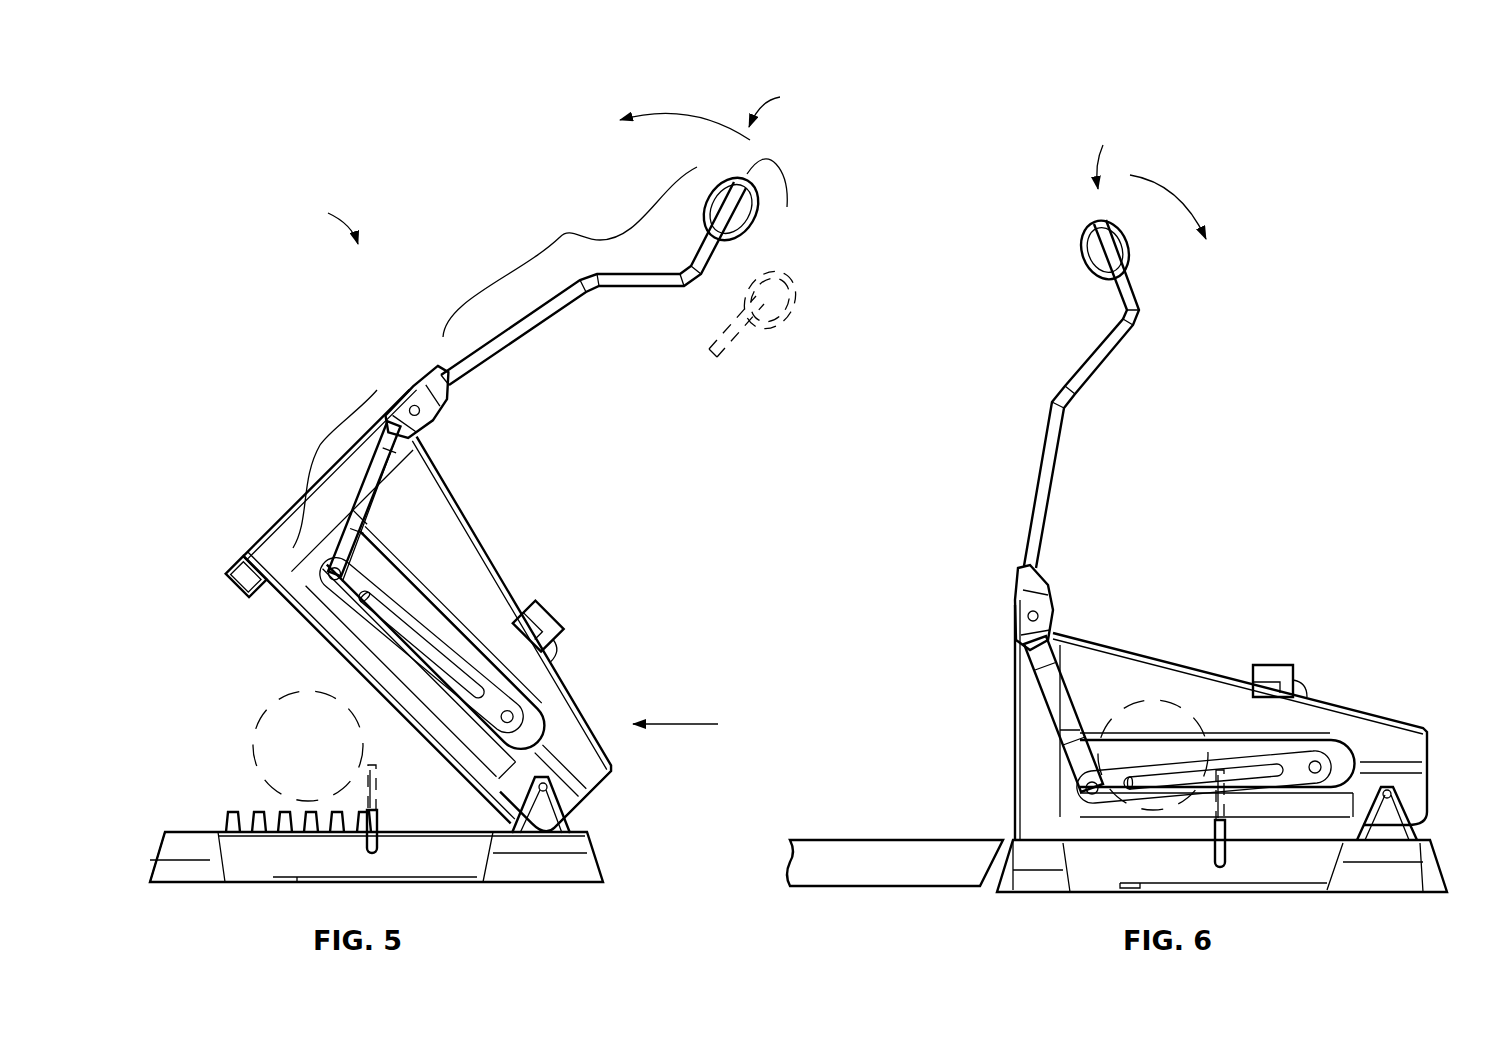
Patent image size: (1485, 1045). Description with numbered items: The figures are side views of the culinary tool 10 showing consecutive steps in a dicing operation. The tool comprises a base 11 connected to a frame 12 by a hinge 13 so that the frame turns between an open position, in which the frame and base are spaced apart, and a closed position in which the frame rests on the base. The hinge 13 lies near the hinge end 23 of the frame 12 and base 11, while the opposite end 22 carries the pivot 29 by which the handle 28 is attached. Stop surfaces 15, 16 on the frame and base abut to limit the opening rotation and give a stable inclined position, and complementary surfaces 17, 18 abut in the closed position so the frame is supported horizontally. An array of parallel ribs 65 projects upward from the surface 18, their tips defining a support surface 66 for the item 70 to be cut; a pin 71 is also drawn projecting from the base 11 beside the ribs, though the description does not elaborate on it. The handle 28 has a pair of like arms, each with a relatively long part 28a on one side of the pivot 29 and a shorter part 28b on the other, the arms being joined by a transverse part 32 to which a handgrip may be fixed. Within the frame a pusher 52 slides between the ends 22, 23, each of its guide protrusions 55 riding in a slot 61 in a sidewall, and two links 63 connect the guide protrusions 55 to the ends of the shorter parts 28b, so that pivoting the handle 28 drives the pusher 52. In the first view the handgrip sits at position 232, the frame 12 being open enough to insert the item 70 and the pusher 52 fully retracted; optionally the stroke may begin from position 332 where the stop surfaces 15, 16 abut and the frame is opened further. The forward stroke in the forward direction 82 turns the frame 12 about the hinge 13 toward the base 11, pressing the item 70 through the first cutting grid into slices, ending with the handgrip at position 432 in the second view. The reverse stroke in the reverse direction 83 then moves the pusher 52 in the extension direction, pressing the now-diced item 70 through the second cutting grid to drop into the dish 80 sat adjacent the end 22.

In FIG. 5, the culinary tool 10 is at (310, 218).
In FIG. 5, the base 11 is at (188, 871).
In FIG. 6, the base 11 is at (1222, 866).
In FIG. 5, the frame 12 is at (279, 541).
In FIG. 5, the hinge 13 is at (538, 792).
In FIG. 6, the hinge 13 is at (1387, 813).
In FIG. 5, the stop surface 15 is at (549, 780).
In FIG. 5, the stop surface 16 is at (617, 764).
In FIG. 5, the complementary surface 17 is at (287, 604).
In FIG. 5, the complementary surface 18 is at (175, 826).
In FIG. 5, the end 22 is at (298, 469).
In FIG. 6, the end 22 is at (1020, 713).
In FIG. 5, the hinge end 23 is at (693, 724).
In FIG. 5, the handle 28 is at (572, 342).
In FIG. 6, the handle 28 is at (1081, 394).
In FIG. 5, the long part of arm 28a is at (570, 252).
In FIG. 5, the shorter part of arm 28b is at (316, 469).
In FIG. 5, the pivot 29 is at (427, 412).
In FIG. 6, the pivot 29 is at (1034, 607).
In FIG. 5, the transverse part 32 is at (790, 290).
In FIG. 6, the transverse part 32 is at (1098, 216).
In FIG. 5, the pusher 52 is at (528, 660).
In FIG. 6, the pusher 52 is at (1272, 750).
In FIG. 5, the guide protrusion 55 is at (560, 733).
In FIG. 6, the guide protrusion 55 is at (1216, 771).
In FIG. 5, the slot 61 is at (379, 565).
In FIG. 6, the slot 61 is at (1063, 715).
In FIG. 5, the link 63 is at (432, 625).
In FIG. 6, the link 63 is at (1203, 776).
In FIG. 5, the rib 65 is at (263, 843).
In FIG. 5, the support surface 66 is at (180, 810).
In FIG. 5, the item 70 is at (310, 720).
In FIG. 6, the item 70 is at (1180, 700).
In FIG. 5, the pin 71 is at (374, 800).
In FIG. 6, the pin 71 is at (1220, 818).
In FIG. 6, the dish 80 is at (897, 862).
In FIG. 5, the forward direction 82 is at (685, 117).
In FIG. 6, the reverse direction 83 is at (1192, 219).
In FIG. 5, the position 232 is at (792, 110).
In FIG. 5, the position 332 is at (812, 264).
In FIG. 6, the position 432 is at (1113, 152).